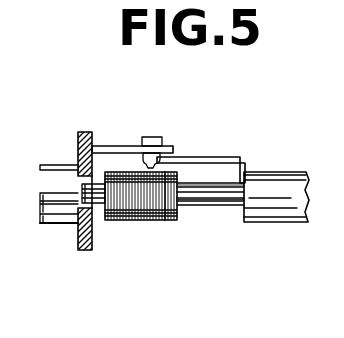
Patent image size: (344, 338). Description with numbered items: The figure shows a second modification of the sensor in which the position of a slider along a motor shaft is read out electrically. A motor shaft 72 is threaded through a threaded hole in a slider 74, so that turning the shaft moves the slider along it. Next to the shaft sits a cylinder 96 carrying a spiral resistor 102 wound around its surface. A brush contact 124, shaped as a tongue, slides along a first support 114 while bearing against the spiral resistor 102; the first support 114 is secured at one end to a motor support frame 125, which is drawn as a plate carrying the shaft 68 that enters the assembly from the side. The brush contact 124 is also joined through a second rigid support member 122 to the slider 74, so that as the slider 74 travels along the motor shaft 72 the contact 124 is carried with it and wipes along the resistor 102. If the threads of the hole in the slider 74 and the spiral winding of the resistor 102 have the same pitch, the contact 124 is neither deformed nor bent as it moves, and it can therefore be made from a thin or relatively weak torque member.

The drive shaft 68 is at (55, 182).
The motor shaft 72 is at (213, 193).
The slider 74 is at (280, 207).
The cylinder 96 is at (180, 216).
The spiral resistor 102 is at (140, 198).
The first support 114 is at (110, 146).
The second rigid support member 122 is at (203, 158).
The brush contact 124 is at (148, 162).
The motor support frame 125 is at (77, 247).